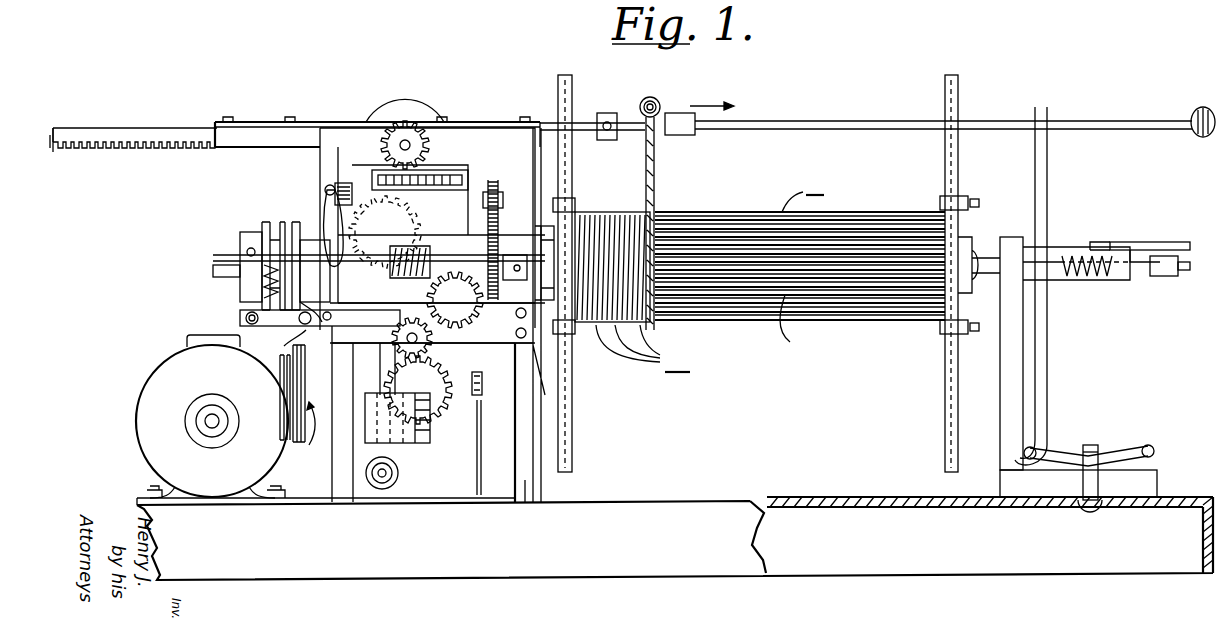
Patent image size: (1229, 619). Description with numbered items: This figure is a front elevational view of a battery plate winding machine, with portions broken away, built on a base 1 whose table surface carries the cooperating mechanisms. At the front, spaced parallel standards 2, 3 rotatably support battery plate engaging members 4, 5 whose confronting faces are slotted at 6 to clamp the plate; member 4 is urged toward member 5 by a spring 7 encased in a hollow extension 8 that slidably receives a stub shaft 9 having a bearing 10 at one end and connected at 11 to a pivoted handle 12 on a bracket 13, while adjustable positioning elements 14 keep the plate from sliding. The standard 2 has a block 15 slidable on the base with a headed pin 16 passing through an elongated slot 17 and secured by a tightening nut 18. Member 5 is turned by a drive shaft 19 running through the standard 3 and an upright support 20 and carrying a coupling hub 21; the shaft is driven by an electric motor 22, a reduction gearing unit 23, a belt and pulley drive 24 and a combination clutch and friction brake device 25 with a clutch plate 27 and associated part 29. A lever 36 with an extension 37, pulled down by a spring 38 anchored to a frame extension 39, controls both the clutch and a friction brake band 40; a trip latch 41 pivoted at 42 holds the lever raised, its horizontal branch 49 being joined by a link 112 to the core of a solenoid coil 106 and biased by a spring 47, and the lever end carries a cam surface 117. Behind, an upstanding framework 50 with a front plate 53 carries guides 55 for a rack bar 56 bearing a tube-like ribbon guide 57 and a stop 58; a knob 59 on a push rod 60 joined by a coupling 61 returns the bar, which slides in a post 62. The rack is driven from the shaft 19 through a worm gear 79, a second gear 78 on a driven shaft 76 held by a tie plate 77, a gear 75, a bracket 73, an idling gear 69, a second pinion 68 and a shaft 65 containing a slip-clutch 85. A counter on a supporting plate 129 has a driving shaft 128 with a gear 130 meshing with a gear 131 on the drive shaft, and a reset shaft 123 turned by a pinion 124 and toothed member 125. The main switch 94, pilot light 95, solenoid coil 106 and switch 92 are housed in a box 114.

The base 1 is at (695, 512).
The standard 2 is at (1010, 413).
The standard 3 is at (527, 480).
The battery plate engaging member 4 is at (945, 430).
The battery plate engaging member 5 is at (575, 444).
The slot 6 is at (575, 408).
The spring 7 is at (1090, 287).
The hollow extension 8 is at (1055, 282).
The stub shaft 9 is at (978, 262).
The bearing 10 is at (960, 240).
The connection 11 is at (1162, 275).
The pivoted handle 12 is at (1140, 243).
The bracket 13 is at (1098, 243).
The adjustable positioning elements 14 is at (575, 205).
The block 15 is at (1140, 480).
The headed pin 16 is at (1092, 445).
The elongated slot 17 is at (1152, 500).
The tightening nut 18 is at (1148, 445).
The drive shaft 19 is at (215, 262).
The upright support 20 is at (345, 425).
The coupling hub 21 is at (590, 228).
The electric motor 22 is at (163, 388).
The reduction gearing unit 23 is at (187, 340).
The belt and pulley drive 24 is at (305, 413).
The combination power transmitting clutch and friction brake device 25 is at (235, 242).
The clutch plate 27 is at (264, 235).
The clutch member 29 is at (285, 230).
The lever 36 is at (312, 240).
The extension 37 is at (292, 236).
The spring 38 is at (245, 278).
The frame extension 39 is at (242, 320).
The friction brake band 40 is at (240, 243).
The trip latch 41 is at (304, 397).
The pivot 42 is at (326, 322).
The spring 47 is at (286, 327).
The horizontal branch 49 is at (328, 419).
The upstanding framework 50 is at (343, 143).
The front plate 53 is at (497, 130).
The guides 55 is at (228, 140).
The rack bar 56 is at (158, 134).
The tube-like member 57 is at (656, 100).
The stop 58 is at (608, 112).
The knob 59 is at (1195, 105).
The push rod 60 is at (800, 126).
The coupling 61 is at (690, 132).
The post 62 is at (1045, 158).
The shaft 65 is at (410, 148).
The second pinion 68 is at (378, 124).
The idling gear 69 is at (412, 176).
The bracket 73 is at (400, 292).
The gear 75 is at (506, 332).
The driven shaft 76 is at (422, 335).
The tie plate 77 is at (550, 315).
The second gear 78 is at (450, 395).
The worm gear 79 is at (412, 258).
The slip-clutch 85 is at (412, 110).
The switch 92 is at (476, 372).
The main switch 94 is at (479, 405).
The pilot light 95 is at (392, 484).
The solenoid coil 106 is at (395, 440).
The link 112 is at (407, 418).
The box 114 is at (477, 488).
The cam surface 117 is at (353, 178).
The shaft 123 is at (345, 192).
The pinion 124 is at (340, 200).
The toothed member 125 is at (325, 190).
The counter driving shaft 128 is at (468, 195).
The supporting plate 129 is at (500, 226).
The gear 130 is at (500, 190).
The gear 131 is at (505, 312).